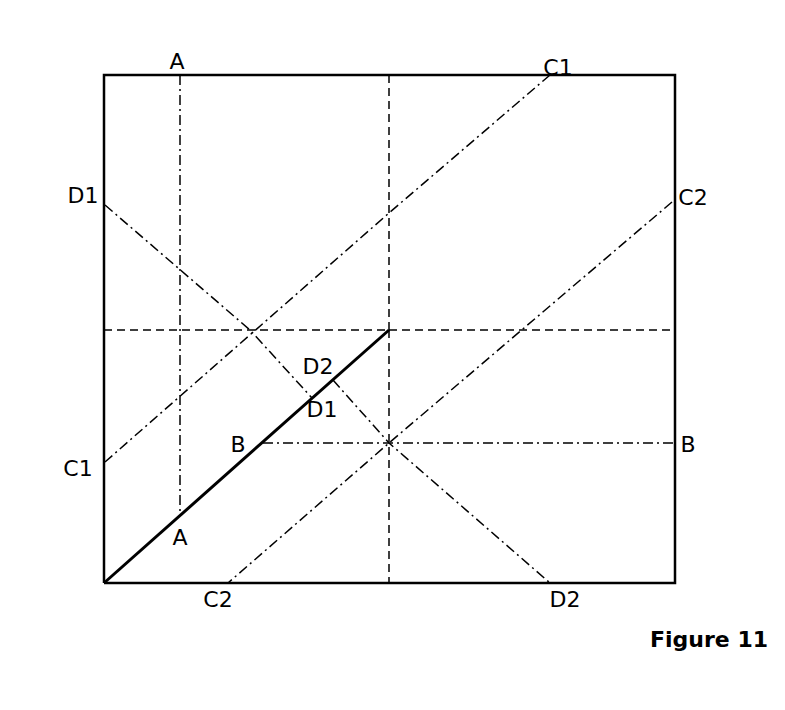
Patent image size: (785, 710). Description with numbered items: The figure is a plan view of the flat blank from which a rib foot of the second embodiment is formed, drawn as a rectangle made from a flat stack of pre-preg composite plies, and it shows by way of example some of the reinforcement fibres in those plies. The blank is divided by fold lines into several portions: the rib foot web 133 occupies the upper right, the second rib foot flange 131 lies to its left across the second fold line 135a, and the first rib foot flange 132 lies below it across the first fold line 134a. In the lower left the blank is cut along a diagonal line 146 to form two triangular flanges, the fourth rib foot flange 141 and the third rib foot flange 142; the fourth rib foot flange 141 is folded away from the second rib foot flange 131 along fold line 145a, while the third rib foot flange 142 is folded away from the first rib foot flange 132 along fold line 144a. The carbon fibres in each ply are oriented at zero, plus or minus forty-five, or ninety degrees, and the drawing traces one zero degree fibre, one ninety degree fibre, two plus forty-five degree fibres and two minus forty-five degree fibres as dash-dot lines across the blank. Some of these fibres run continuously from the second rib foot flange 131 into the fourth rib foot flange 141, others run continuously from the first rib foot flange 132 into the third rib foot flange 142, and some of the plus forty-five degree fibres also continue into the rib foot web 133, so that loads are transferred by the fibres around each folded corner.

The second rib foot flange 131 is at (270, 169).
The first rib foot flange 132 is at (564, 420).
The rib foot web 133 is at (506, 213).
The fourth rib foot flange 141 is at (213, 410).
The third rib foot flange 142 is at (276, 490).
The first fold line 134a is at (615, 328).
The second fold line 135a is at (389, 135).
The fold line 144a is at (388, 532).
The fold line 145a is at (157, 328).
The diagonal line 146 is at (215, 487).